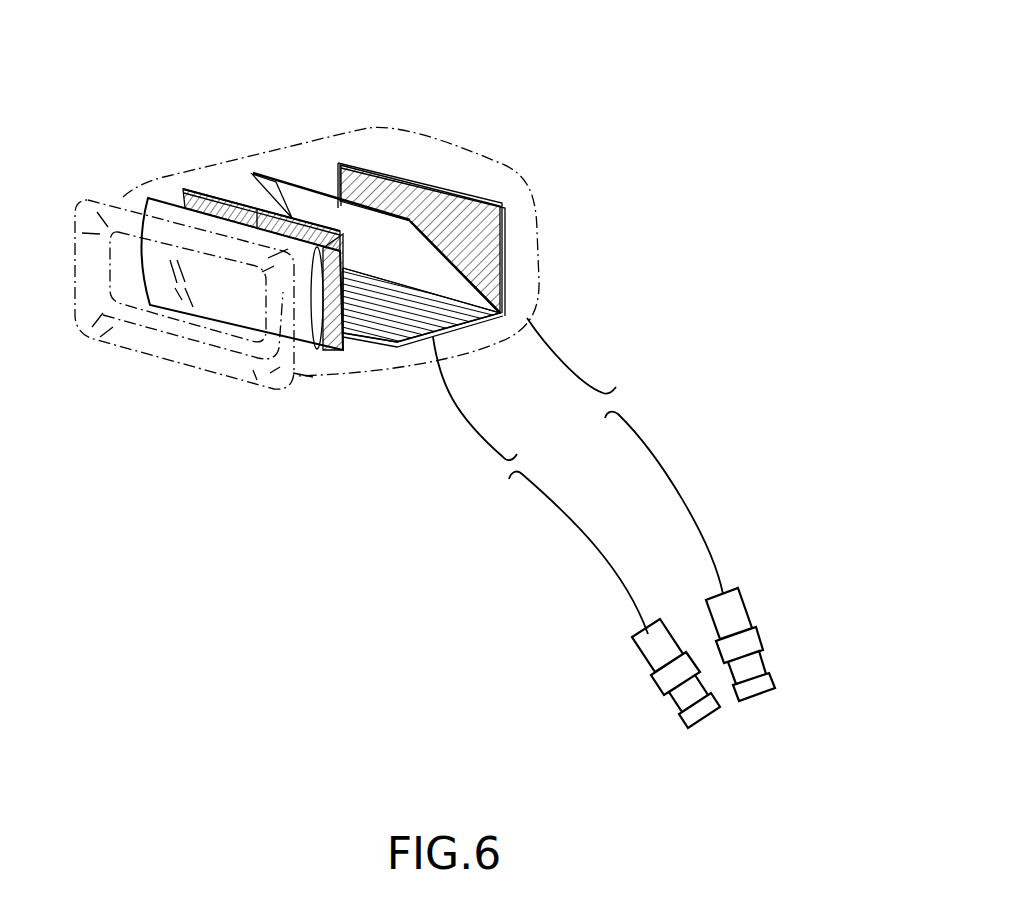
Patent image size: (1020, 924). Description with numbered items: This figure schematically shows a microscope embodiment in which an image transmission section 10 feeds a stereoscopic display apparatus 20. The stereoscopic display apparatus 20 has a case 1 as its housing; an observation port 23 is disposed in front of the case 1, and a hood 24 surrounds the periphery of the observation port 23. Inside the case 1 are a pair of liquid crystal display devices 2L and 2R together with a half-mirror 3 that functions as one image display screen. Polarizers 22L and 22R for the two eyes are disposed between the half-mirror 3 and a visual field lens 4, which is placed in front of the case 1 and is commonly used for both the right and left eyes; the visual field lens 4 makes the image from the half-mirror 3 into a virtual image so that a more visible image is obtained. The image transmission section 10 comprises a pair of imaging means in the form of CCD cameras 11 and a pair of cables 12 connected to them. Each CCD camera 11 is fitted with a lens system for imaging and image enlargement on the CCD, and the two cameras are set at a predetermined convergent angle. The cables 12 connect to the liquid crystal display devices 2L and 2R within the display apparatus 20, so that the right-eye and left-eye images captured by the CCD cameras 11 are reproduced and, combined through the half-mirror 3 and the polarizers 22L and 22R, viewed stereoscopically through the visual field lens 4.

The case 1 is at (494, 142).
The stereoscopic display apparatus 20 is at (448, 119).
The hood 24 is at (113, 203).
The observation port 23 is at (130, 284).
The visual field lens 4 is at (306, 327).
The polarizer 22L is at (194, 189).
The polarizer 22R is at (288, 216).
The half-mirror 3 is at (338, 212).
The liquid crystal display device 2R is at (465, 211).
The liquid crystal display device 2L is at (402, 322).
The image transmission section 10 is at (628, 689).
The cables 12 is at (691, 512).
The CCD cameras 11 is at (647, 650).